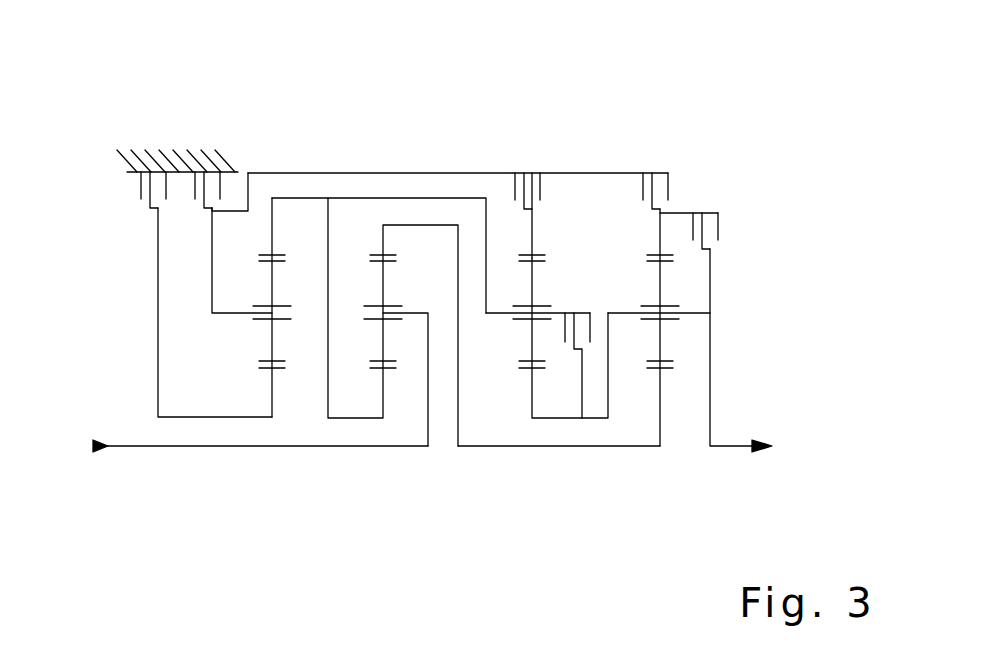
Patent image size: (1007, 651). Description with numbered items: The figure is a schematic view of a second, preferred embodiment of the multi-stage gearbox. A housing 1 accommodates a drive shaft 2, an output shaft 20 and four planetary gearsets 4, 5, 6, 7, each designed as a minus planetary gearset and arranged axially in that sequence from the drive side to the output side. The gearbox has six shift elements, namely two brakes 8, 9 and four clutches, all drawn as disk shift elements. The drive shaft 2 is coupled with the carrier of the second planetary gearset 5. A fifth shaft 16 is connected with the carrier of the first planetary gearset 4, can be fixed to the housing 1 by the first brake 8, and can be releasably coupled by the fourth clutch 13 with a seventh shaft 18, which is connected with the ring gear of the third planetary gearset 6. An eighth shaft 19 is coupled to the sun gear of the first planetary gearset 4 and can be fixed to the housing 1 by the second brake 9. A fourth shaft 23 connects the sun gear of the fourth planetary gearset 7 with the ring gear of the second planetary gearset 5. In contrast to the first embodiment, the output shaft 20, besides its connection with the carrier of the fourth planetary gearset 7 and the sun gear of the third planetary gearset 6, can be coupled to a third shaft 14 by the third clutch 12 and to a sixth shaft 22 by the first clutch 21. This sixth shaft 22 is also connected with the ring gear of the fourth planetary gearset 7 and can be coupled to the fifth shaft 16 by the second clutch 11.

The housing 1 is at (160, 168).
The drive shaft 2 is at (342, 447).
The first planetary gearset 4 is at (271, 152).
The second planetary gearset 5 is at (383, 152).
The third planetary gearset 6 is at (529, 152).
The fourth planetary gearset 7 is at (656, 152).
The first brake 8 is at (211, 195).
The second brake 9 is at (143, 192).
The second clutch 11 is at (643, 175).
The third clutch 12 is at (575, 349).
The fourth clutch 13 is at (527, 190).
The third shaft 14 is at (303, 197).
The fifth shaft 16 is at (352, 172).
The seventh shaft 18 is at (528, 238).
The eighth shaft 19 is at (158, 352).
The output shaft 20 is at (708, 365).
The first clutch 21 is at (718, 213).
The sixth shaft 22 is at (680, 213).
The fourth shaft 23 is at (478, 447).